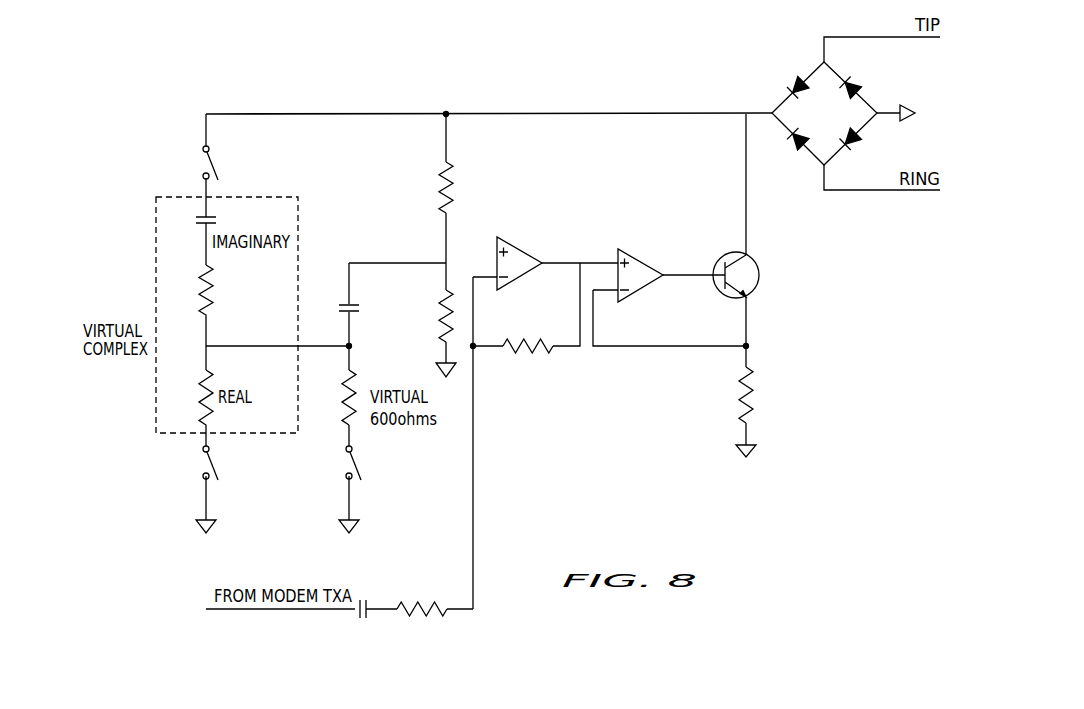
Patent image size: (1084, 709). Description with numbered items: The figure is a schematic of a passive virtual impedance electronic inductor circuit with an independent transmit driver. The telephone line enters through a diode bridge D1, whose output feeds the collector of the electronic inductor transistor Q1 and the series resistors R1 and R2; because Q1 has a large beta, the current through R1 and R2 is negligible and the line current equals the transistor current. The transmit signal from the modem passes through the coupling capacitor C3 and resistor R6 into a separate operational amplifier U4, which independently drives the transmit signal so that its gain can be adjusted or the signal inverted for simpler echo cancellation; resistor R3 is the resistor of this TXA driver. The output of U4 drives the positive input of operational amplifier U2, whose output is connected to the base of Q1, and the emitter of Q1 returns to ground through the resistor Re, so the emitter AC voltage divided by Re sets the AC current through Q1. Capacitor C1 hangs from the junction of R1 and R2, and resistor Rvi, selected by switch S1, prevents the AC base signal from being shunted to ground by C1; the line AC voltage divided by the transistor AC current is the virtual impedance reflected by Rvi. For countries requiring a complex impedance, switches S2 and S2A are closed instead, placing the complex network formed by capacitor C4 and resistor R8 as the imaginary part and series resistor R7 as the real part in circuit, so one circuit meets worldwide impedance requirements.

The switch S2A is at (195, 181).
The capacitor of the complex impedance network C4 is at (194, 235).
The resistor R8 is at (192, 317).
The series resistor of the complex impedance network R7 is at (192, 408).
The switch S2 is at (224, 463).
The capacitor C1 is at (338, 306).
The resistor Rvi is at (337, 397).
The switch S1 is at (365, 463).
The resistor R1 is at (432, 187).
The resistor R2 is at (434, 316).
The operational amplifier U4 is at (519, 257).
The resistor of the TXA driver R3 is at (528, 332).
The operational amplifier U2 is at (665, 269).
The transistor Q1 is at (745, 272).
The emitter resistor Re is at (760, 395).
The diode bridge D1 is at (854, 113).
The coupling capacitor C3 is at (377, 622).
The resistor R6 is at (422, 597).